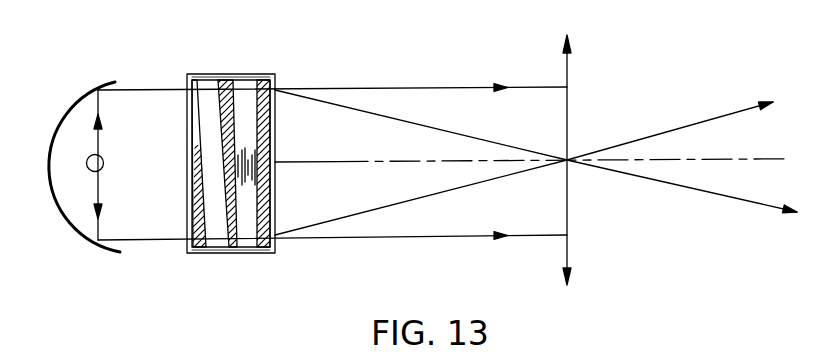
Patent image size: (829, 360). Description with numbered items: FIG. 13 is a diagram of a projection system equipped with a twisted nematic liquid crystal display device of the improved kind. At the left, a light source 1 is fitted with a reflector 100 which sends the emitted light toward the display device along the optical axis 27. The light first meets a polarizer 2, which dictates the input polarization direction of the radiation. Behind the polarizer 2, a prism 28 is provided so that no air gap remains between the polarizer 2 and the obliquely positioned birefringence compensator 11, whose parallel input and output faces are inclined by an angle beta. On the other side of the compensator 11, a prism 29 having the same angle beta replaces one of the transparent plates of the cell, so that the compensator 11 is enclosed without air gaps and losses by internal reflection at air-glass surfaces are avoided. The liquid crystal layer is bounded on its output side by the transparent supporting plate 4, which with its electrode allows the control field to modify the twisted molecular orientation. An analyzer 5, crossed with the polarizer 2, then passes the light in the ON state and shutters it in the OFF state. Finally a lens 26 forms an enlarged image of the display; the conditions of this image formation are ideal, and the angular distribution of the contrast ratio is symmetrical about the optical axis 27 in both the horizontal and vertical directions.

The reflector 100 is at (75, 228).
The light source 1 is at (103, 166).
The polarizer 2 is at (185, 89).
The birefringence compensator 11 is at (218, 87).
The prism 29 is at (227, 72).
The prism 28 is at (204, 254).
The transparent supporting plate 4 is at (266, 254).
The analyzer 5 is at (273, 253).
The lens 26 is at (570, 100).
The optical axis 27 is at (405, 165).